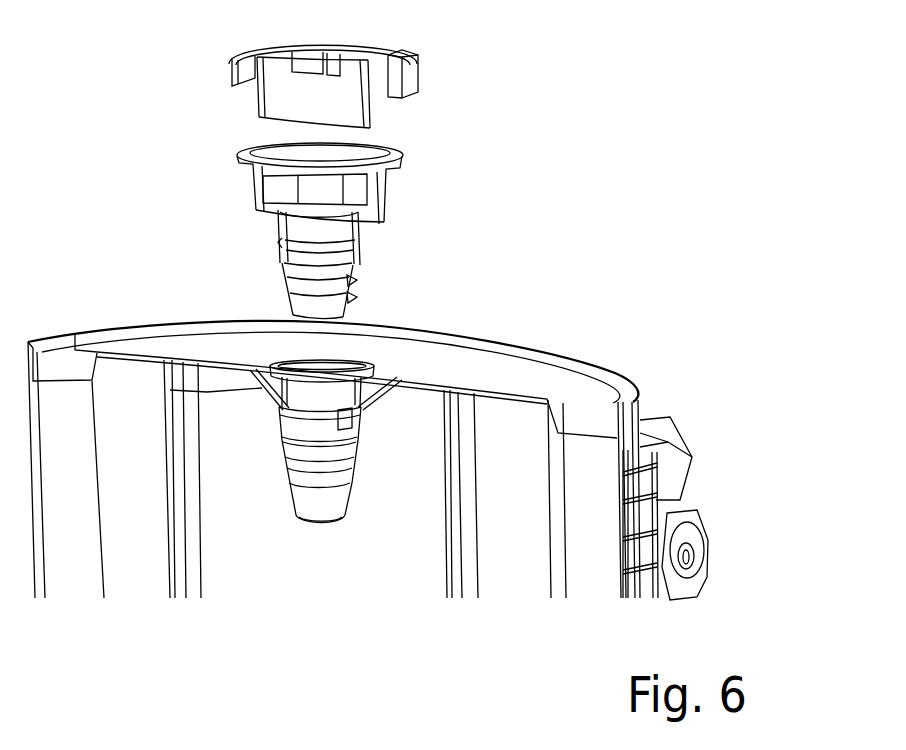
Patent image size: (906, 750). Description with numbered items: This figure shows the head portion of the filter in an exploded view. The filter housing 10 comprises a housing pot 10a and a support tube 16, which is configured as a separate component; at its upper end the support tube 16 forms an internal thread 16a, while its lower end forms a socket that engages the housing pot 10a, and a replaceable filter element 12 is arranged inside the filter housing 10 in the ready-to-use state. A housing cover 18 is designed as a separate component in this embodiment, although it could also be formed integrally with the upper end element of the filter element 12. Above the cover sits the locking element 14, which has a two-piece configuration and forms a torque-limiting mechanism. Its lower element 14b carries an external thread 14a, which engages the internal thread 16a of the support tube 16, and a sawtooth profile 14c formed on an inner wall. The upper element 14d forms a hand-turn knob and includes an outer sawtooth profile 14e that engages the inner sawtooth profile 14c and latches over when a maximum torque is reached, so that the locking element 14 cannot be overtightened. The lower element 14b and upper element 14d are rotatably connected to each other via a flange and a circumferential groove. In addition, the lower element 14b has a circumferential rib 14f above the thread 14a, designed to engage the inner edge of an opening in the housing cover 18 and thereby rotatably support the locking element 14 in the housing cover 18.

The filter housing 10 is at (716, 573).
The housing pot 10a is at (647, 583).
The filter element 12 is at (522, 437).
The locking element 14 is at (437, 100).
The external thread 14a is at (353, 302).
The lower element 14b is at (355, 243).
The sawtooth profile 14c is at (292, 197).
The upper element 14d is at (417, 76).
The outer sawtooth profile 14e is at (373, 108).
The circumferential rib 14f is at (279, 250).
The support tube 16 is at (453, 522).
The internal thread 16a is at (350, 437).
The housing cover 18 is at (480, 372).